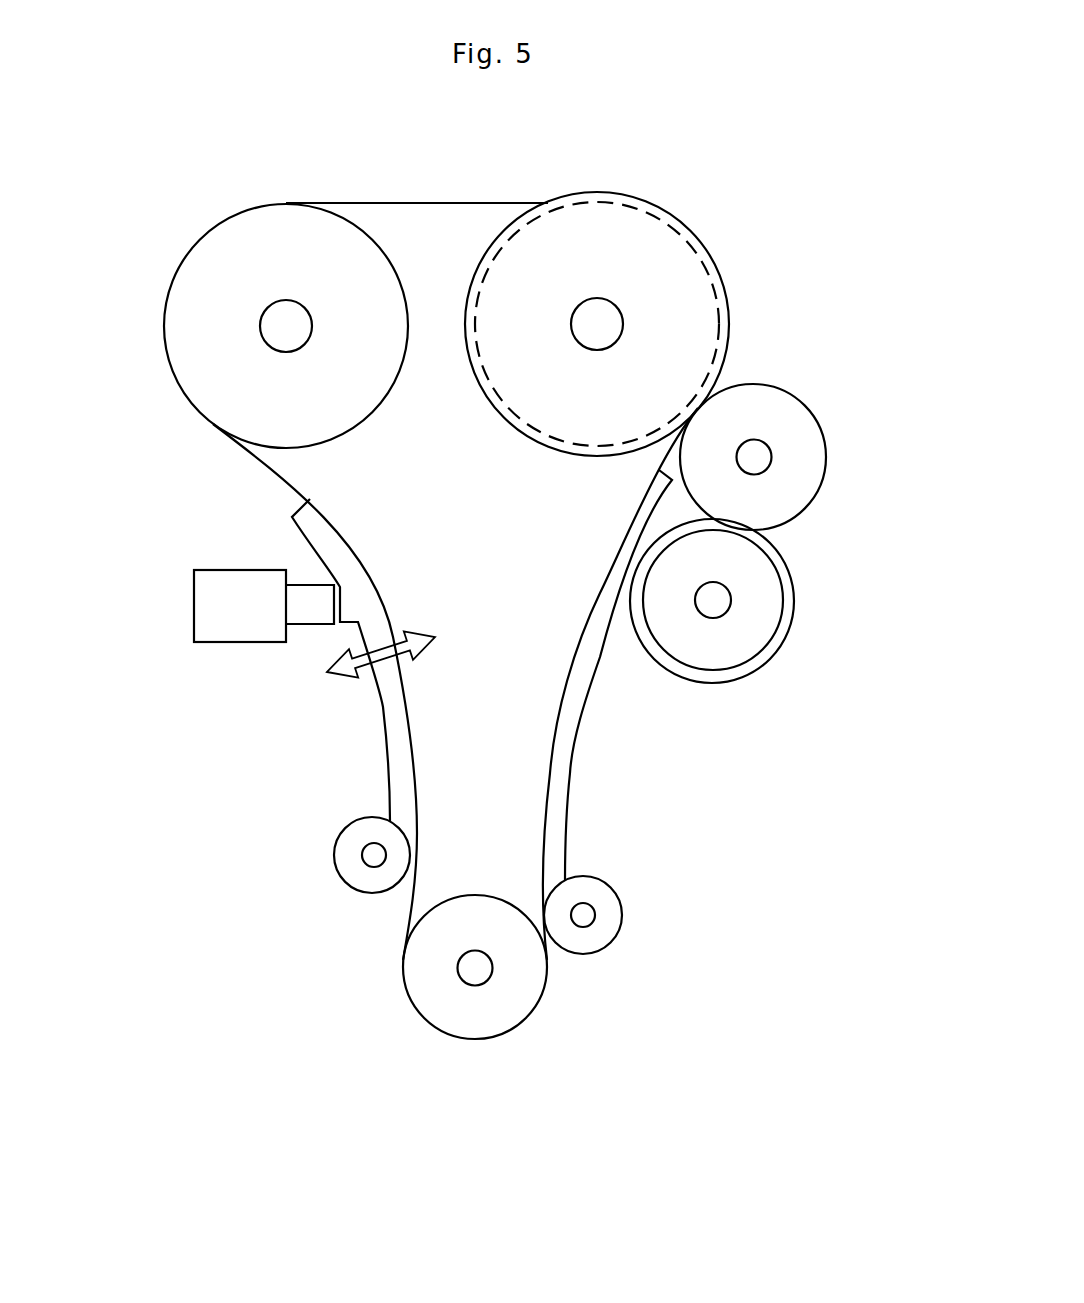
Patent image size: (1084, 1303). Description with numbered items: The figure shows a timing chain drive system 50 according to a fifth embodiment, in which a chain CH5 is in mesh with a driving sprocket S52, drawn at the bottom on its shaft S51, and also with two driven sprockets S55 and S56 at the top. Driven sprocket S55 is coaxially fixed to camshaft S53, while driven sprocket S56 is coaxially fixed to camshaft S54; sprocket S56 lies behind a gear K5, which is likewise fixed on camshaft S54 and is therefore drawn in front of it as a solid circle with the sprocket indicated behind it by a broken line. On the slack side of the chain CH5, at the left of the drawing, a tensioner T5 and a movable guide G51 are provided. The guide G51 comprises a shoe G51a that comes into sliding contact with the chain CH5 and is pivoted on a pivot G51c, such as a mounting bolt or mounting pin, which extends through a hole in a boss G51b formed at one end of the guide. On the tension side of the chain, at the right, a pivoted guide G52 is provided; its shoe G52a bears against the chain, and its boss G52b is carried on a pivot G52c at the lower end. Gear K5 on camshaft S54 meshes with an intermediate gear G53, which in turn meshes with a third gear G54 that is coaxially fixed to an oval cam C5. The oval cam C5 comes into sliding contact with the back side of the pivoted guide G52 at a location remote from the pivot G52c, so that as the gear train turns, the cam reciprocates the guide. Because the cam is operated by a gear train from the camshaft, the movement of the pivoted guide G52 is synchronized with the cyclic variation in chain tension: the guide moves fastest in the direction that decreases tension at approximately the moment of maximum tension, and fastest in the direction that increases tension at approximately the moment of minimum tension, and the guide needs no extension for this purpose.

The timing chain drive system 50 is at (457, 1103).
The chain CH5 is at (447, 203).
The gear K5 is at (673, 210).
The camshaft S53 is at (260, 318).
The driven sprocket S55 is at (187, 358).
The camshaft S54 is at (622, 307).
The driven sprocket S56 is at (722, 329).
The intermediate gear G53 is at (826, 448).
The third gear G54 is at (770, 603).
The oval cam C5 is at (793, 637).
The tensioner T5 is at (200, 604).
The movable guide G51 is at (190, 712).
The shoe G51a is at (409, 736).
The boss G51b is at (354, 832).
The pivot G51c is at (370, 855).
The pivoted guide G52 is at (807, 782).
The shoe of pivoted guide G52a is at (550, 762).
The boss of pivoted guide G52b is at (611, 890).
The pivot G52c is at (590, 918).
The shaft of driving sprocket S51 is at (460, 975).
The driving sprocket S52 is at (520, 1010).